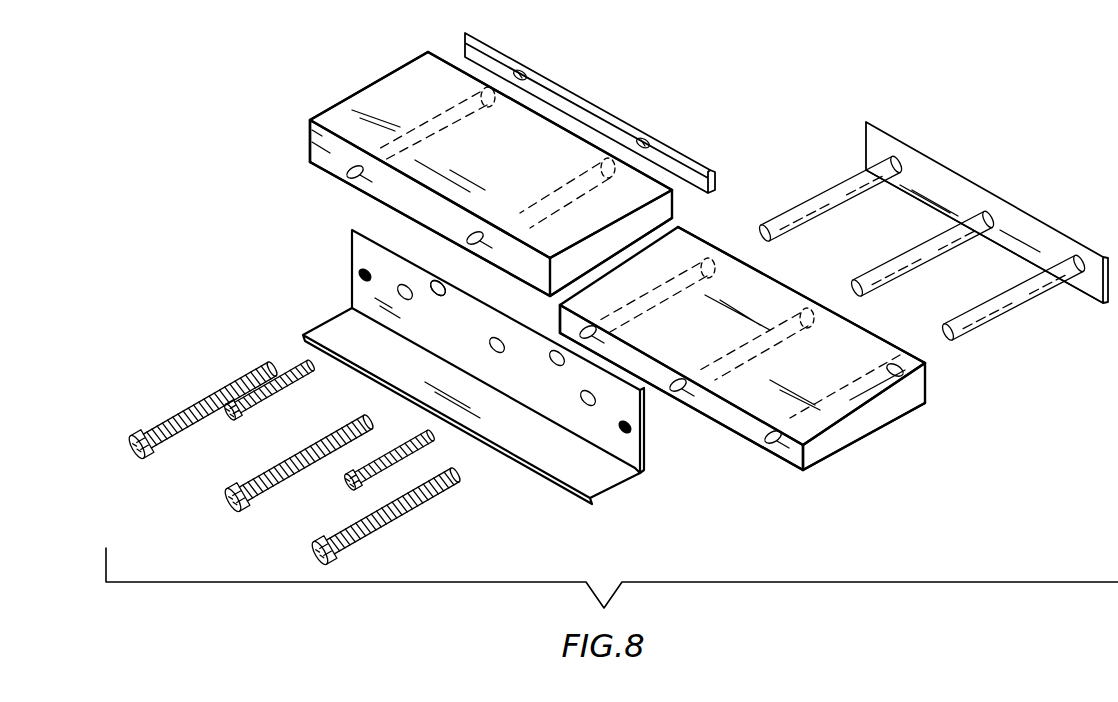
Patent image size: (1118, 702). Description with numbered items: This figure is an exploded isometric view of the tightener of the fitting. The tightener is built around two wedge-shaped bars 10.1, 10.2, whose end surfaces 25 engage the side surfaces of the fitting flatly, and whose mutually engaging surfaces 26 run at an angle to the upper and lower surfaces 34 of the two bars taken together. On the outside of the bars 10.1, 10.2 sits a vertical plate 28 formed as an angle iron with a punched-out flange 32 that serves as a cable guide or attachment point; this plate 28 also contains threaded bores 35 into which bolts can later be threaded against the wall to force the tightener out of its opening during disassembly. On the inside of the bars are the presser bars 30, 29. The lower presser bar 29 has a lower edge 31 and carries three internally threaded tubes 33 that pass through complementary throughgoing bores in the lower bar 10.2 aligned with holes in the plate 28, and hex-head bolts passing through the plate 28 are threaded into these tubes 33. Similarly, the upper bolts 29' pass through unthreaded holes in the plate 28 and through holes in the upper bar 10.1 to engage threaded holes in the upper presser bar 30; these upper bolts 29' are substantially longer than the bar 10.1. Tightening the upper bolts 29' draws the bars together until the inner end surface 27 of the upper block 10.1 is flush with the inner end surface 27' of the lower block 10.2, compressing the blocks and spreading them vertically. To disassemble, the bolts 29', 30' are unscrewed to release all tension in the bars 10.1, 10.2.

The upper wedge-shaped bar 10.1 is at (491, 174).
The lower wedge-shaped bar 10.2 is at (867, 427).
The end surfaces 25 is at (335, 66).
The mutually engaging surfaces 26 is at (630, 251).
The inner end surface of upper block 27 is at (556, 270).
The inner end surface of lower block 27' is at (803, 295).
The vertical plate 28 is at (459, 297).
The presser bar 29 is at (987, 212).
The upper bolts 29' is at (330, 424).
The upper presser bar 30 is at (590, 113).
The bolts 30' is at (251, 436).
The lower edge 31 is at (1018, 257).
The flange 32 is at (592, 506).
The internally threaded tubes 33 is at (863, 200).
The upper and lower surfaces 34 is at (423, 70).
The threaded bores 35 is at (342, 258).